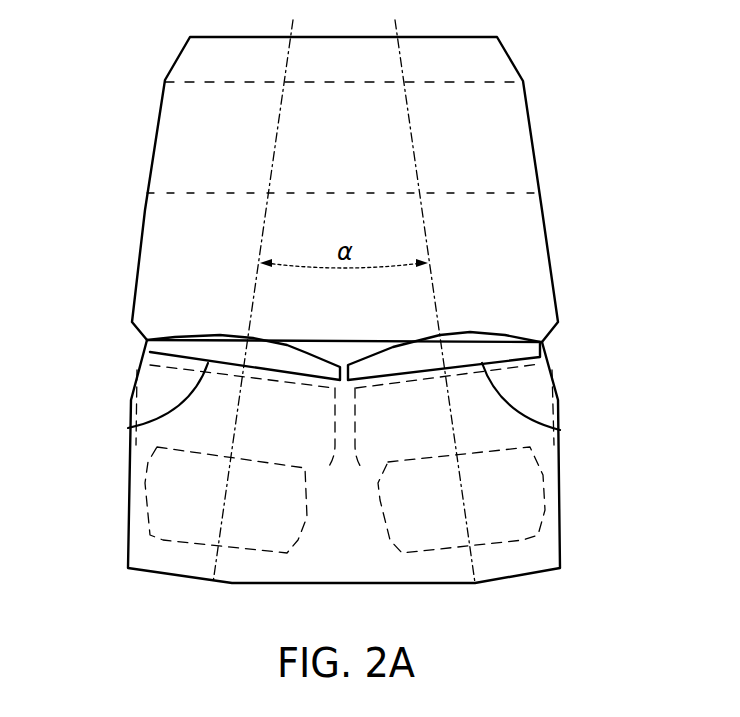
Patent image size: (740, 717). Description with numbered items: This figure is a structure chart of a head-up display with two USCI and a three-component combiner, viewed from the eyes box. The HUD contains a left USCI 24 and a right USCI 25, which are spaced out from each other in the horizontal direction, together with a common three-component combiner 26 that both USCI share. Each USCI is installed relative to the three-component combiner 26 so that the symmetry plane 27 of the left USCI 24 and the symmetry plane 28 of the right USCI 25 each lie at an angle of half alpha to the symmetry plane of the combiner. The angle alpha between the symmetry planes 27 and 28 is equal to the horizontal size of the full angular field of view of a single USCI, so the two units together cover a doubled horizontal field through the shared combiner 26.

The left USCI 24 is at (128, 429).
The right USCI 25 is at (560, 430).
The three-component combiner 26 is at (150, 168).
The symmetry plane of the left USCI 27 is at (252, 298).
The symmetry plane of the right USCI 28 is at (435, 300).